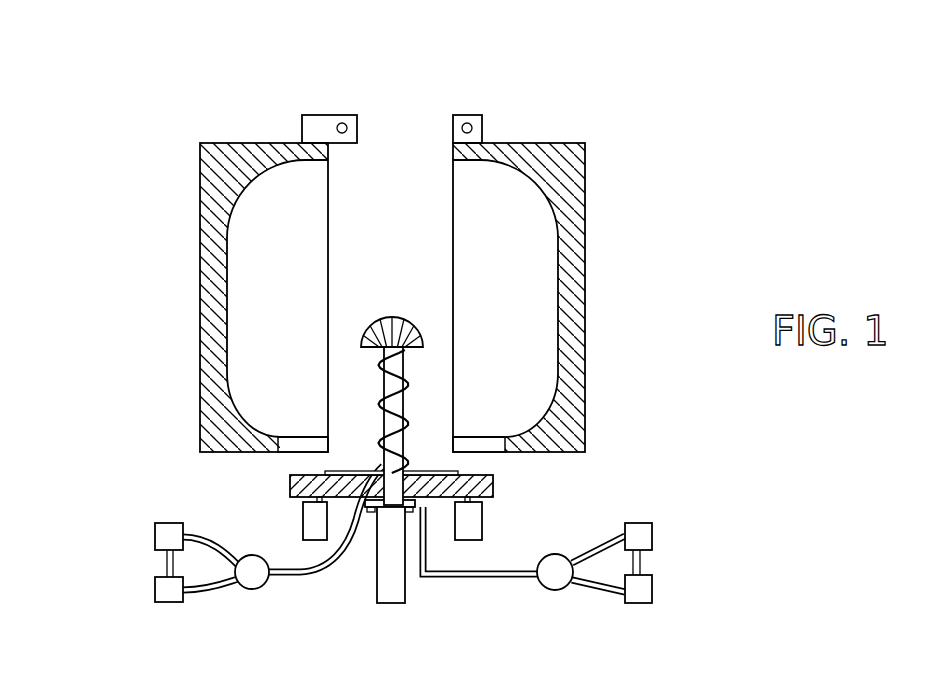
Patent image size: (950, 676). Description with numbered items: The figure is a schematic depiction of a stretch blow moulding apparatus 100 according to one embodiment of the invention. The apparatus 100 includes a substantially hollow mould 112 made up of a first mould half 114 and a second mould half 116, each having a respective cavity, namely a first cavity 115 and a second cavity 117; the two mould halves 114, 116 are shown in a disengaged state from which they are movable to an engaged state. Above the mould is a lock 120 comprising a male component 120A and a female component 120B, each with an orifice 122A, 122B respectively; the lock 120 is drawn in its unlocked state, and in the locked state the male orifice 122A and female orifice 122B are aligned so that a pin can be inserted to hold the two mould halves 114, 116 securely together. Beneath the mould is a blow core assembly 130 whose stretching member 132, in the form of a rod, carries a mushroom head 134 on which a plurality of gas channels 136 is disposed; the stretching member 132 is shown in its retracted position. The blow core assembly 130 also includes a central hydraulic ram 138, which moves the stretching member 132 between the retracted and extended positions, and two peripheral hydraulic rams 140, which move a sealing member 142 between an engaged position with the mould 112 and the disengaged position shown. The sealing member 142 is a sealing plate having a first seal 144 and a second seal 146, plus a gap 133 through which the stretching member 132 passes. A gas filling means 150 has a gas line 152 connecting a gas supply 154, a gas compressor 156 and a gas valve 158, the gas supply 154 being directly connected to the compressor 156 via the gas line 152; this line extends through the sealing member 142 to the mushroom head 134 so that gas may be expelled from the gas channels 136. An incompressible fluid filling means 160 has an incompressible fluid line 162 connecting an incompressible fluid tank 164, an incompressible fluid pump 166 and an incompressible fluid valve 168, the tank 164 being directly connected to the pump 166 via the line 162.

The stretch blow moulding apparatus 100 is at (650, 126).
The mould 112 is at (590, 281).
The first mould half 114 is at (200, 225).
The first cavity 115 is at (272, 315).
The second mould half 116 is at (585, 206).
The second cavity 117 is at (515, 310).
The lock 120 is at (483, 107).
The male component 120A is at (310, 122).
The female component 120B is at (460, 122).
The male orifice 122A is at (347, 130).
The female orifice 122B is at (472, 128).
The blow core assembly 130 is at (530, 486).
The stretching member 132 is at (400, 407).
The gap 133 is at (455, 475).
The mushroom head 134 is at (383, 350).
The gas channels 136 is at (416, 320).
The central hydraulic ram 138 is at (388, 575).
The peripheral hydraulic rams 140 is at (312, 519).
The sealing member 142 is at (295, 490).
The first seal 144 is at (330, 472).
The second seal 146 is at (365, 497).
The gas filling means 150 is at (130, 565).
The gas line 152 is at (305, 583).
The gas supply 154 is at (165, 590).
The gas compressor 156 is at (165, 540).
The gas valve 158 is at (250, 575).
The incompressible fluid filling means 160 is at (680, 568).
The incompressible fluid line 162 is at (477, 577).
The incompressible fluid tank 164 is at (645, 590).
The incompressible fluid pump 166 is at (640, 535).
The incompressible fluid valve 168 is at (555, 575).